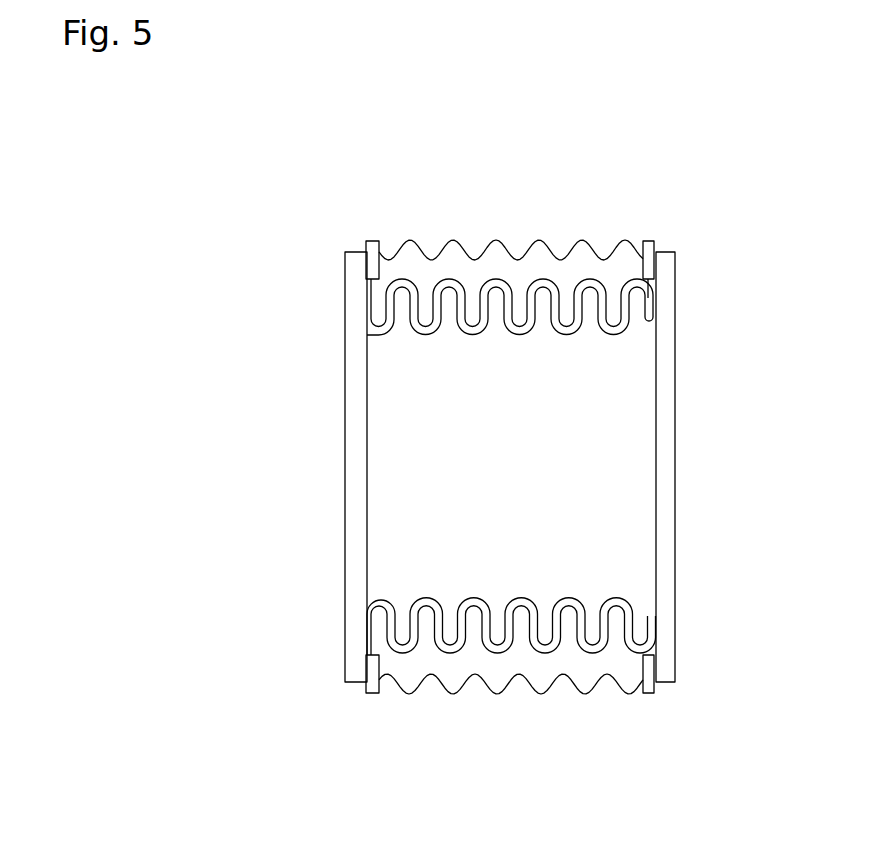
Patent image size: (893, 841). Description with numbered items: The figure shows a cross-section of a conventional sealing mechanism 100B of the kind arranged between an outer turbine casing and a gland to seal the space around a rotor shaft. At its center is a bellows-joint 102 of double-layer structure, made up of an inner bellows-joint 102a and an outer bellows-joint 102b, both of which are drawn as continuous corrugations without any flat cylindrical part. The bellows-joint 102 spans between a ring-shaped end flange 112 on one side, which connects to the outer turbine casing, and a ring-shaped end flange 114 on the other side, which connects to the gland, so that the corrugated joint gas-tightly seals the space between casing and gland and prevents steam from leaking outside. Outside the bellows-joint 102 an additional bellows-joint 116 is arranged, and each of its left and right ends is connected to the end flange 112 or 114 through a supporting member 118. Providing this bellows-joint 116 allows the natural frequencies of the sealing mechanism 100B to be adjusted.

The sealing mechanism 100B is at (572, 134).
The bellows-joint 102 is at (410, 467).
The inner bellows-joint 102a is at (400, 289).
The outer bellows-joint 102b is at (431, 318).
The end flange 112 is at (346, 552).
The end flange 114 is at (675, 540).
The bellows-joint 116 is at (487, 240).
The supporting member 118 is at (372, 240).